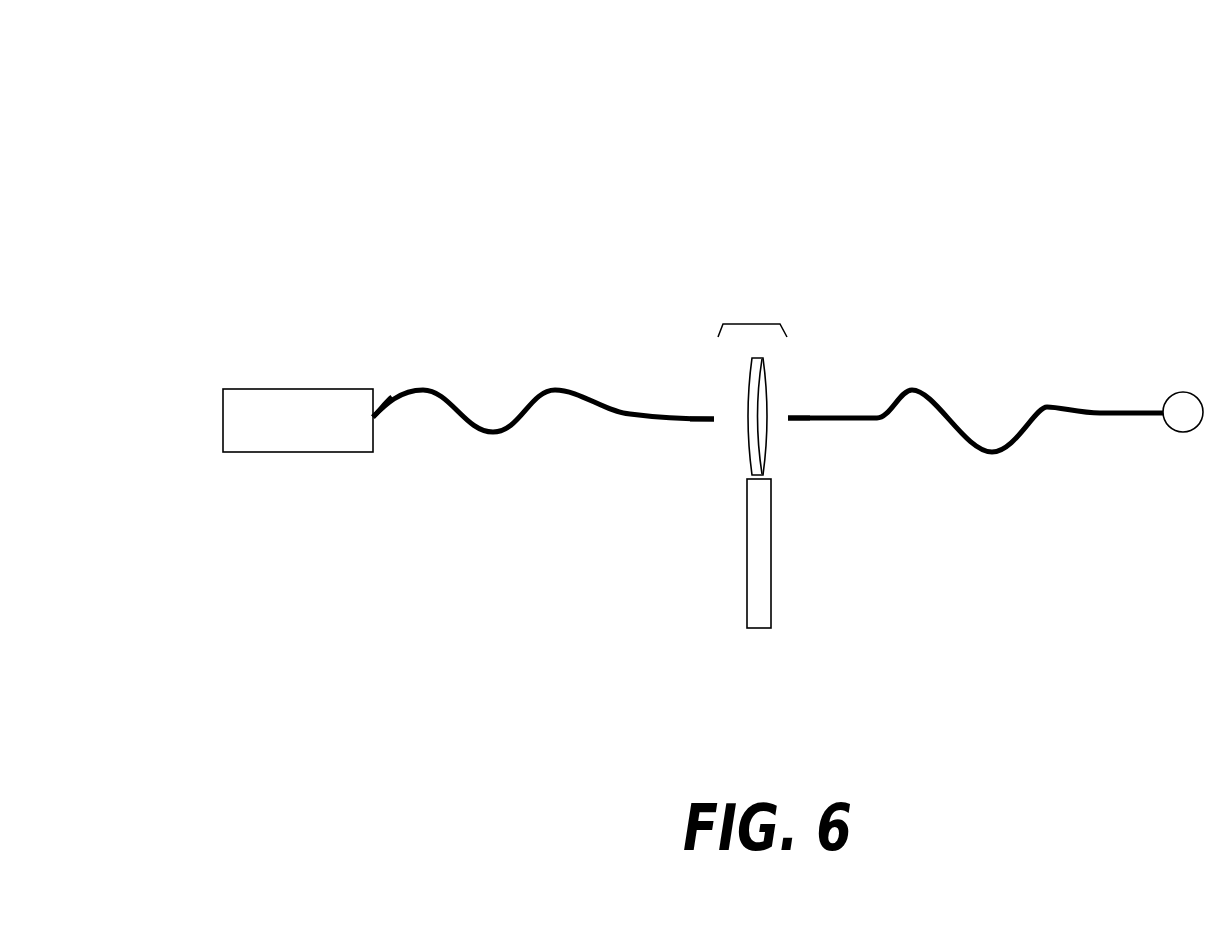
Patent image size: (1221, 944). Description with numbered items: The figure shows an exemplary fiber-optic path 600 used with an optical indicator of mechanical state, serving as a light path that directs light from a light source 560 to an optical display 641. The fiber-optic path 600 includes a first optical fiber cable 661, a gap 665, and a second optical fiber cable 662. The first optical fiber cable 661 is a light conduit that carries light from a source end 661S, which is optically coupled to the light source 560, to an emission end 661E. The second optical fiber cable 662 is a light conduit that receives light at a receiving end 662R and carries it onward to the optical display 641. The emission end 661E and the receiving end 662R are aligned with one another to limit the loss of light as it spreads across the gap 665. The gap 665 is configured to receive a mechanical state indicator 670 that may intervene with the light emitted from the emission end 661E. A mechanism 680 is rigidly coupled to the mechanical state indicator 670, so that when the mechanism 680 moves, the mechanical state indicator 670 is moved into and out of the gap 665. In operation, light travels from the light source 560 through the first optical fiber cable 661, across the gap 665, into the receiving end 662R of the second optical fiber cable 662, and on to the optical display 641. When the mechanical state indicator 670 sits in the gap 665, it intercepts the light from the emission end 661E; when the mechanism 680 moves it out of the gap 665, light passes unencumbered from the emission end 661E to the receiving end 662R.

The fiber-optic path 600 is at (256, 138).
The light source 560 is at (313, 389).
The first optical fiber cable 661 is at (567, 390).
The source end 661S is at (386, 388).
The emission end 661E is at (712, 414).
The gap 665 is at (753, 323).
The mechanical state indicator 670 is at (762, 438).
The mechanism 680 is at (759, 628).
The second optical fiber cable 662 is at (1048, 407).
The receiving end 662R is at (789, 412).
The optical display 641 is at (1178, 392).